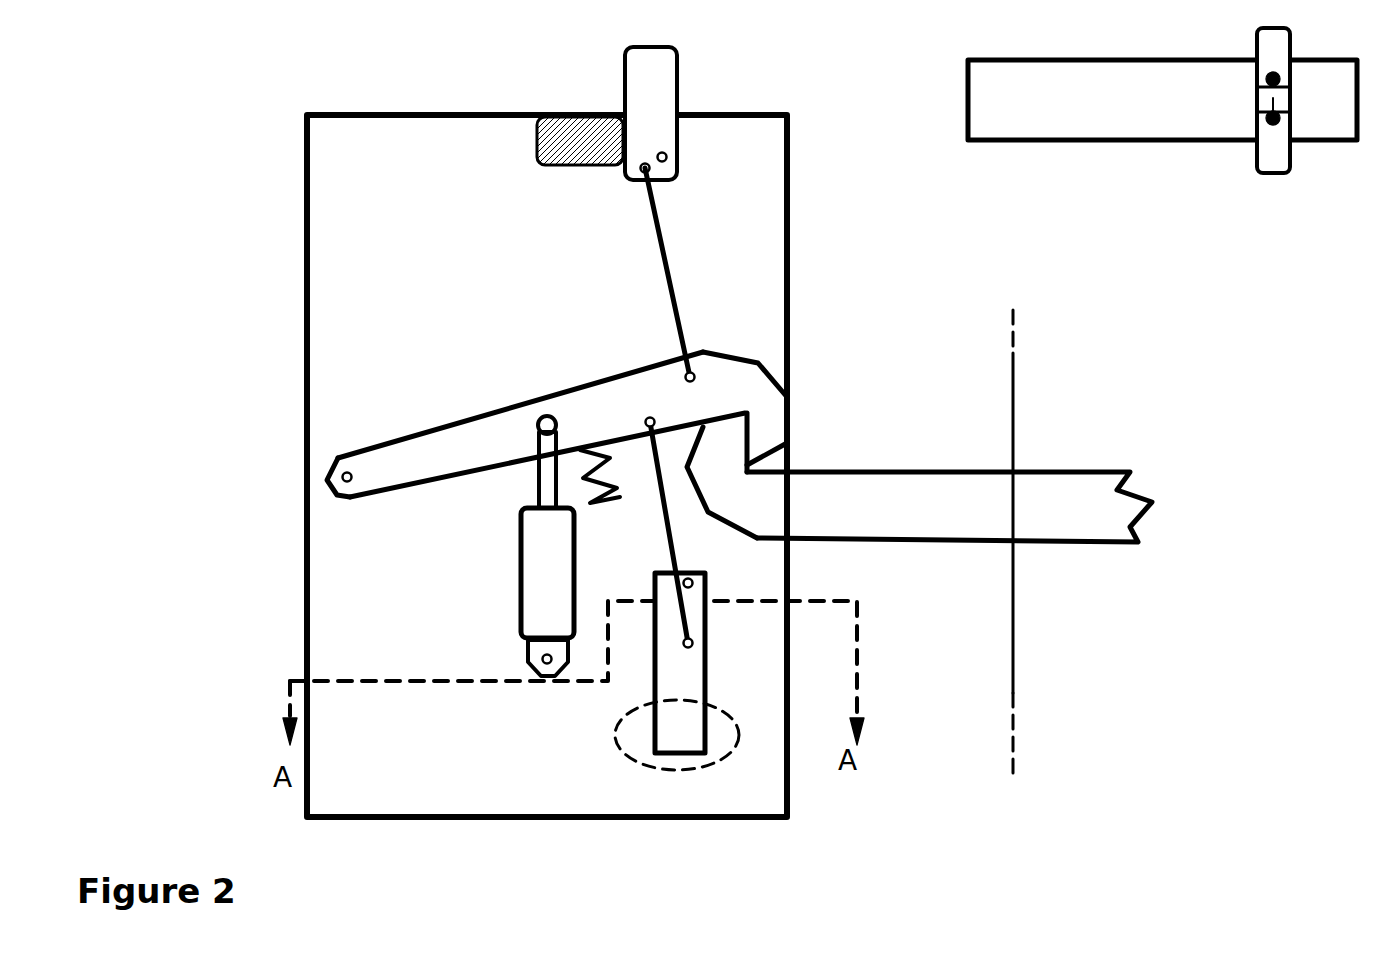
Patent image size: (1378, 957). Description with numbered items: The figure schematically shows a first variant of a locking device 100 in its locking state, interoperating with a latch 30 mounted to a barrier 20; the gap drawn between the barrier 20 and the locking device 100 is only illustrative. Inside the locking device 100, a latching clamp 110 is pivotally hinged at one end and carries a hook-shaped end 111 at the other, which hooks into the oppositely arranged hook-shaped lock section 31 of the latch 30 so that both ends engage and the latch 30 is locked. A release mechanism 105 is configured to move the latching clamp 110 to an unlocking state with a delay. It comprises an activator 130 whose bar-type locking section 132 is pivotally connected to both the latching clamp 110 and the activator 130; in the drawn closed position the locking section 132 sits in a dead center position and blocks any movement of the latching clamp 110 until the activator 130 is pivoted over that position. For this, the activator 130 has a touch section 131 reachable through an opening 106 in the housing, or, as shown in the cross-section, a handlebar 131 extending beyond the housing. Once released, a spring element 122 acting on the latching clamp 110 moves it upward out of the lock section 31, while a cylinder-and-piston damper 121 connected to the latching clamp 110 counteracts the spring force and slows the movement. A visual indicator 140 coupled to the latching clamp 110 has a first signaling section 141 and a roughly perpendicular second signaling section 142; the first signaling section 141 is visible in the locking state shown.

The locking device 100 is at (306, 251).
The release mechanism 105 is at (548, 726).
The opening 106 is at (675, 770).
The latching clamp 110 is at (558, 411).
The hook-shaped end 111 is at (776, 417).
The damper 121 is at (528, 550).
The spring element 122 is at (602, 490).
The activator 130 is at (1004, 422).
The touch section 131 is at (677, 743).
The locking section 132 is at (675, 547).
The visual indicator 140 is at (614, 104).
The first signaling section 141 is at (660, 67).
The second signaling section 142 is at (563, 131).
The barrier 20 is at (1015, 413).
The latch 30 is at (919, 545).
The lock section 31 is at (737, 438).